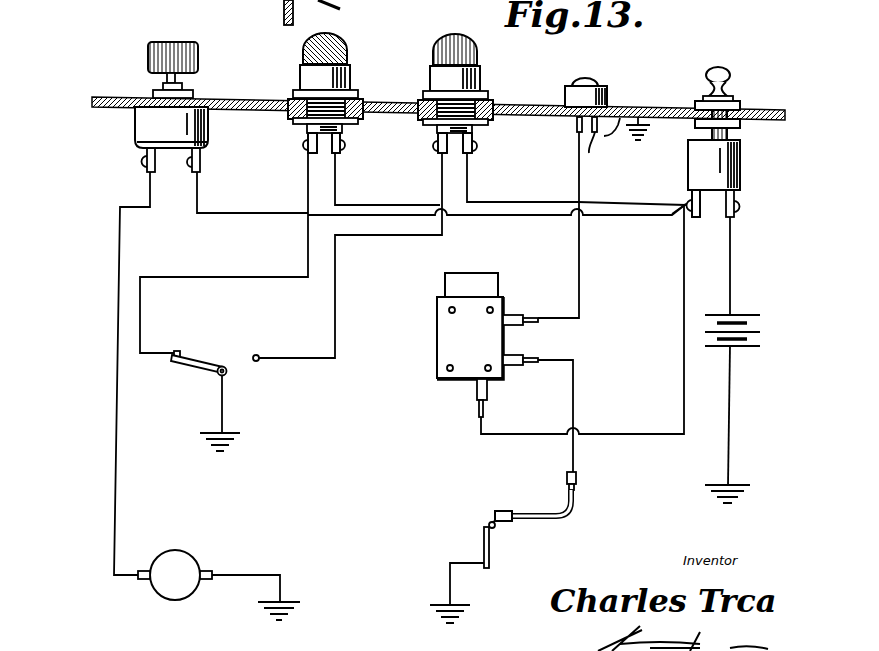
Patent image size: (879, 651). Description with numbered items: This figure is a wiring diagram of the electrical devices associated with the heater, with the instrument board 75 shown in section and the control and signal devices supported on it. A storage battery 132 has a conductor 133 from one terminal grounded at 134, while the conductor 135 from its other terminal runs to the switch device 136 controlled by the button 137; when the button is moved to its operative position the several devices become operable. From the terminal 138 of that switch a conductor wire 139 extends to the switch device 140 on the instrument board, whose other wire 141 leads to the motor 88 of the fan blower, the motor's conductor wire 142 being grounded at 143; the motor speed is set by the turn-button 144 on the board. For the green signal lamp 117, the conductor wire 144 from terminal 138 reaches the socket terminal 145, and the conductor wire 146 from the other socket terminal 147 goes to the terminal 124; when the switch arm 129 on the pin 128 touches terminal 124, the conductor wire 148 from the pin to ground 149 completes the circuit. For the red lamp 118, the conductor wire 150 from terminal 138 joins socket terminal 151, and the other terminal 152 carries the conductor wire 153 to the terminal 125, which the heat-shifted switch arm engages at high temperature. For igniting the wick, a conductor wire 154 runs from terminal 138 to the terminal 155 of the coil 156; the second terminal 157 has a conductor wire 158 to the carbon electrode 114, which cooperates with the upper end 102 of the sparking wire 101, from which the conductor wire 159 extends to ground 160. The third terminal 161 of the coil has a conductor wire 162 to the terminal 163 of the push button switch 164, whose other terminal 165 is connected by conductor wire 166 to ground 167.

The instrument board 75 is at (518, 99).
The motor 88 is at (183, 549).
The sparking wire 101 is at (489, 549).
The upper end of the wire 102 is at (490, 524).
The carbon electrode 114 is at (507, 511).
The green signal lamp 117 is at (338, 52).
The red signal lamp 118 is at (455, 40).
The terminal 124 is at (180, 351).
The terminal 125 is at (257, 354).
The pin 128 is at (227, 372).
The switch arm 129 is at (212, 364).
The storage battery 132 is at (740, 317).
The conductor 133 is at (730, 405).
The ground 134 is at (738, 483).
The conductor 135 is at (733, 250).
The switch device 136 is at (722, 168).
The button 137 is at (710, 84).
The terminal 138 is at (688, 204).
The conductor wire 139 is at (630, 222).
The switch device 140 is at (195, 123).
The wire 141 is at (120, 243).
The conductor wire 142 is at (245, 575).
The ground 143 is at (288, 605).
The turn-button / conductor wire 144 is at (198, 67).
The terminal 145 is at (342, 145).
The conductor wire 146 is at (306, 189).
The terminal 147 is at (305, 144).
The conductor wire 148 is at (227, 410).
The ground 149 is at (200, 436).
The conductor wire 150 is at (503, 200).
The terminal 151 is at (477, 153).
The terminal 152 is at (436, 149).
The conductor wire 153 is at (440, 187).
The conductor wire 154 is at (682, 308).
The terminal 155 is at (477, 388).
The coil 156 is at (453, 333).
The second terminal 157 is at (523, 353).
The conductor wire 158 is at (576, 407).
The conductor wire 159 is at (447, 572).
The ground 160 is at (426, 606).
The third terminal 161 is at (520, 315).
The conductor wire 162 is at (580, 288).
The terminal 163 is at (575, 125).
The push button switch 164 is at (580, 78).
The terminal 165 is at (600, 135).
The conductor wire 166 is at (621, 101).
The ground 167 is at (662, 137).